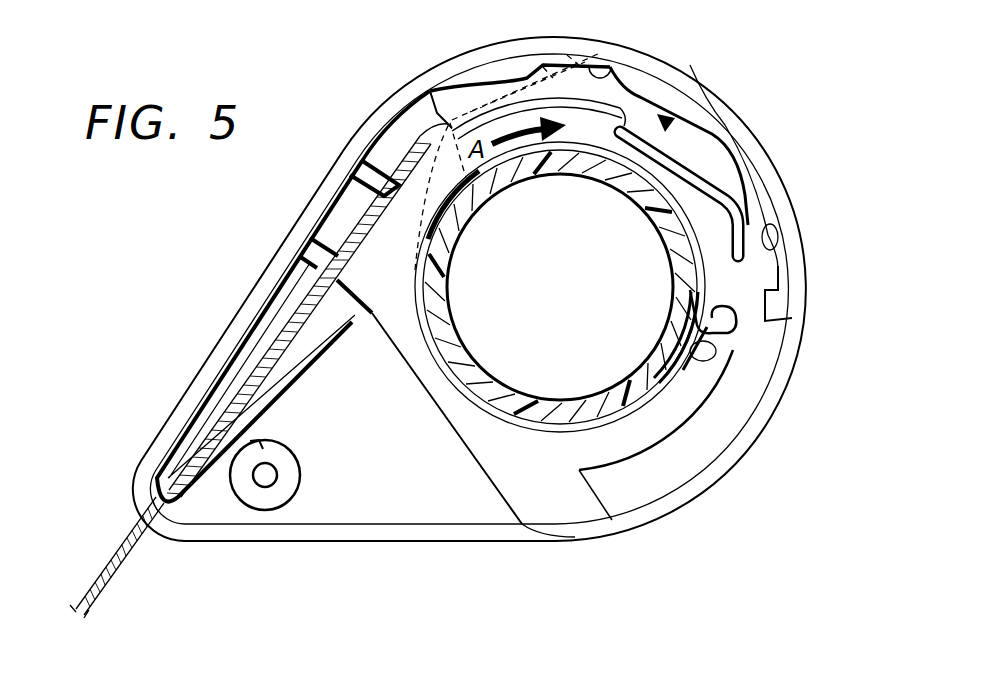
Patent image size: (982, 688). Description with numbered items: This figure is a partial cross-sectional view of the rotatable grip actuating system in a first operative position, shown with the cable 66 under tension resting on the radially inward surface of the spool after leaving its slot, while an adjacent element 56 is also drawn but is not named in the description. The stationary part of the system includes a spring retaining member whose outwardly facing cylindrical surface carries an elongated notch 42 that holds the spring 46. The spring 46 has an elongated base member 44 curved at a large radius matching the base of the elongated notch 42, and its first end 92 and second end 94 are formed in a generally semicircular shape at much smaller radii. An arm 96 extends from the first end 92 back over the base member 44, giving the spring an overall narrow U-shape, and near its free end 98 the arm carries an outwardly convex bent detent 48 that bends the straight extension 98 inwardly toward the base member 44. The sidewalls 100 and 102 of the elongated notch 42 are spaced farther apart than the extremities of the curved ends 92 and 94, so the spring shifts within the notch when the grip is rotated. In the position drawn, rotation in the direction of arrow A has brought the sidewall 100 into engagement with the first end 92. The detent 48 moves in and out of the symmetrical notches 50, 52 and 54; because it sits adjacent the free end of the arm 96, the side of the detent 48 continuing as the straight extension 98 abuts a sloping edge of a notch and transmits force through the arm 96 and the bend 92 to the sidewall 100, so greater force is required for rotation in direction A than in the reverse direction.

The spring retaining elongated notch 42 is at (668, 284).
The elongated base member 44 is at (660, 234).
The spring 46 is at (666, 116).
The detent 48 is at (752, 205).
The notch 50 is at (603, 63).
The notch 52 is at (735, 145).
The notch 54 is at (778, 237).
The ratchet segment 56 is at (490, 62).
The cable 66 is at (353, 230).
The first end 92 is at (614, 186).
The second end 94 is at (722, 360).
The arm 96 is at (677, 157).
The free end 98 is at (790, 262).
The sidewall 100 is at (558, 174).
The sidewall 102 is at (690, 361).